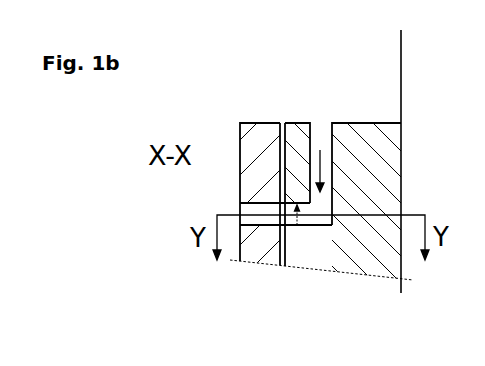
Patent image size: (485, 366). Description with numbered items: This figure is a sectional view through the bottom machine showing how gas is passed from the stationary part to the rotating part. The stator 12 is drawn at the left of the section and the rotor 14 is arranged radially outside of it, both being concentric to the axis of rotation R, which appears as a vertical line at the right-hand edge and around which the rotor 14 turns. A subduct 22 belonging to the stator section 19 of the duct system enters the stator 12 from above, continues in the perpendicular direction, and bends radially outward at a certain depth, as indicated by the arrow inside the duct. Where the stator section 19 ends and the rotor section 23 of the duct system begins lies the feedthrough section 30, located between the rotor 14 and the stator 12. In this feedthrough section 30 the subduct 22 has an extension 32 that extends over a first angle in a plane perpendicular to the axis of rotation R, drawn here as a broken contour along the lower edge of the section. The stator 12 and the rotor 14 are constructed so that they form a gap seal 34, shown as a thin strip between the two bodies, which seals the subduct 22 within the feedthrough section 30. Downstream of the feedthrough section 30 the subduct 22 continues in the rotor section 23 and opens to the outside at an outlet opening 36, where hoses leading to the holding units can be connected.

The stator 12 is at (372, 123).
The rotor 14 is at (278, 123).
The stator section 19 is at (322, 123).
The subduct 22 is at (258, 220).
The rotor section 23 is at (262, 245).
The feedthrough section 30 is at (309, 284).
The extension 32 is at (328, 264).
The gap seal 34 is at (284, 123).
The outlet opening 36 is at (240, 210).
The axis of rotation R is at (405, 47).